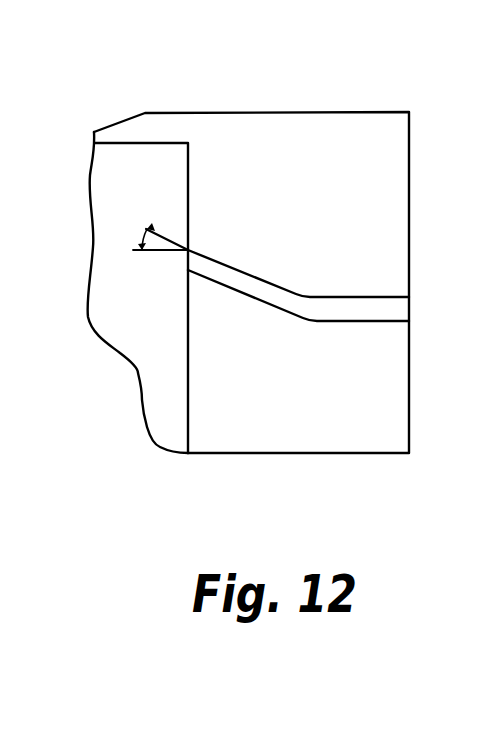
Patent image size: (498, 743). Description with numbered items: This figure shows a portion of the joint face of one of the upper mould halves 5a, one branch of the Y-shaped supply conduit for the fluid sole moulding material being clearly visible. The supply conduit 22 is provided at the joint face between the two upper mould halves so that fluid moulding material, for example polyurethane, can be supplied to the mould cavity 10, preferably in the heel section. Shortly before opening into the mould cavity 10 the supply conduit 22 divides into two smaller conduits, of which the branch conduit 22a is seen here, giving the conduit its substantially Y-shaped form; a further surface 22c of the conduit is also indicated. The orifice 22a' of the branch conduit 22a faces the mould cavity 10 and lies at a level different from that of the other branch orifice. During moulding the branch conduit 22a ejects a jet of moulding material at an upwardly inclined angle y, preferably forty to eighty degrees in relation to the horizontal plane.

The upper mould half 5a is at (279, 112).
The mould cavity 10 is at (151, 192).
The supply conduit 22 is at (256, 215).
The branch conduit 22a is at (313, 156).
The bottom surface of groove 22c is at (345, 308).
The orifice of branch conduit 22a' is at (98, 270).
The upwardly inclined angle y is at (137, 240).